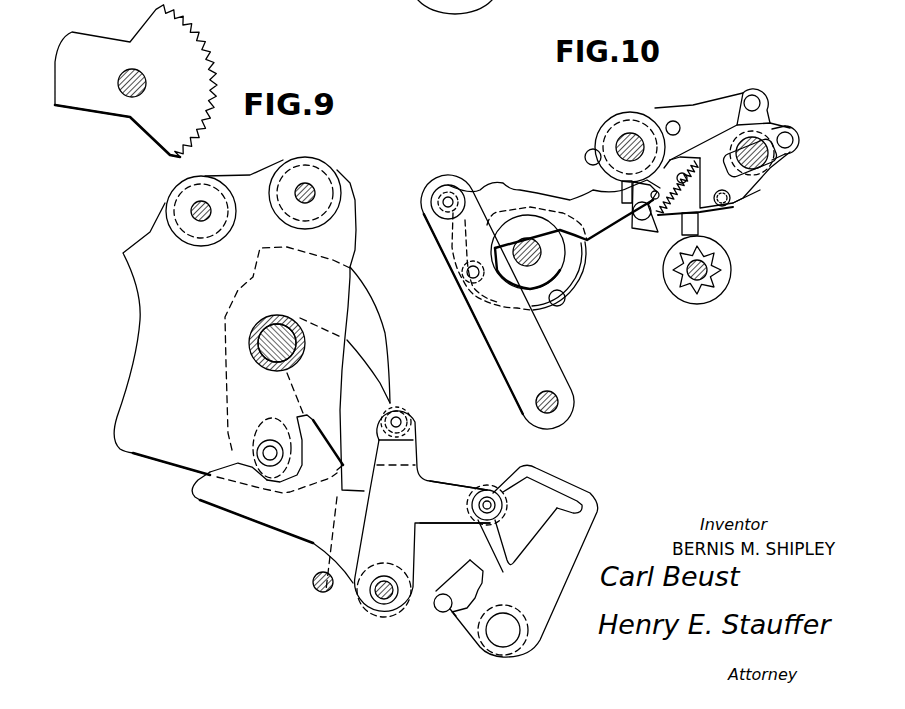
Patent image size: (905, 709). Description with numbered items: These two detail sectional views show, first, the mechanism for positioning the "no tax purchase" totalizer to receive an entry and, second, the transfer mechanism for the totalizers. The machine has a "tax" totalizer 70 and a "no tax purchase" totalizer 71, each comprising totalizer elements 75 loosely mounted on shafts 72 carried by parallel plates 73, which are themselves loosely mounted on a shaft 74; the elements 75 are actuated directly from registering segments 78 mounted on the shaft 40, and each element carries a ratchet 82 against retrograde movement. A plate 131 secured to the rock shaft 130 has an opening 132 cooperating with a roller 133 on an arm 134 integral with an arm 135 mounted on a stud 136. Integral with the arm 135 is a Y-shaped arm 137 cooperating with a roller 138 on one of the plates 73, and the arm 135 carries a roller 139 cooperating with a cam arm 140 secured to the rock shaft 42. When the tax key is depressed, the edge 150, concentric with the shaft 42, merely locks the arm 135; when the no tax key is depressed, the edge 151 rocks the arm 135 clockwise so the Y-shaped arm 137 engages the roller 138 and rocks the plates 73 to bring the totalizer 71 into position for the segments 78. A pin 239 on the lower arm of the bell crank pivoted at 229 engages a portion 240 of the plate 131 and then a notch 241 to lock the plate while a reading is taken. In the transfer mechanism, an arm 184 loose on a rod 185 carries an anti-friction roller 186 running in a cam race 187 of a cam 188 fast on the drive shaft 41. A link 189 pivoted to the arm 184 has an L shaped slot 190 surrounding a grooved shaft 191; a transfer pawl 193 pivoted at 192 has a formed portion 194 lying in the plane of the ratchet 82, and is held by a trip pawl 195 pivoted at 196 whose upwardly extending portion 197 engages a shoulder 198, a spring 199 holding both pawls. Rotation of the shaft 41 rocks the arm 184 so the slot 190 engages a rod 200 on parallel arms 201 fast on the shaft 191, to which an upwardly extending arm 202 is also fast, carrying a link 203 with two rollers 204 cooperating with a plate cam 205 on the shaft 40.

In FIG. 9, the registering segments 78 is at (170, 32).
In FIG. 9, the shaft 40 is at (135, 97).
In FIG. 9, the tax totalizer 70 is at (207, 193).
In FIG. 9, the no tax purchase totalizer 71 is at (310, 176).
In FIG. 9, the shafts 72 is at (297, 196).
In FIG. 9, the parallel plates 73 is at (138, 272).
In FIG. 9, the cam arm 140 is at (253, 277).
In FIG. 10, the cam arm 140 is at (627, 138).
In FIG. 9, the shaft 74 is at (250, 345).
In FIG. 9, the rock shaft 42 is at (265, 428).
In FIG. 9, the roller 138 is at (263, 453).
In FIG. 9, the Y-shaped arm 137 is at (275, 517).
In FIG. 9, the stud 136 is at (375, 598).
In FIG. 9, the arm 135 is at (402, 545).
In FIG. 9, the roller 139 is at (402, 418).
In FIG. 9, the arm 134 is at (433, 487).
In FIG. 9, the roller 133 is at (479, 505).
In FIG. 9, the opening 132 is at (498, 538).
In FIG. 9, the plate 131 is at (540, 610).
In FIG. 9, the pivot 229 is at (565, 482).
In FIG. 9, the rock shaft 130 is at (497, 637).
In FIG. 9, the pin 239 is at (441, 607).
In FIG. 9, the portion 240 is at (445, 614).
In FIG. 9, the notch 241 is at (475, 588).
In FIG. 9, the edge 151 is at (388, 345).
In FIG. 9, the edge 150 is at (366, 374).
In FIG. 10, the link 189 is at (500, 205).
In FIG. 10, the cam 188 is at (585, 273).
In FIG. 10, the cam race 187 is at (566, 300).
In FIG. 10, the drive shaft 41 is at (538, 258).
In FIG. 10, the anti-friction roller 186 is at (469, 278).
In FIG. 10, the arm 184 is at (533, 348).
In FIG. 10, the rod 185 is at (560, 401).
In FIG. 10, the shoulder 198 is at (621, 186).
In FIG. 10, the upwardly extending portion 197 is at (633, 205).
In FIG. 10, the pivot 196 is at (637, 225).
In FIG. 10, the trip pawl 195 is at (647, 216).
In FIG. 10, the formed portion 194 is at (685, 232).
In FIG. 10, the transfer pawl 193 is at (702, 211).
In FIG. 10, the spring 199 is at (693, 187).
In FIG. 10, the pivot 192 is at (737, 206).
In FIG. 10, the grooved shaft 191 is at (772, 160).
In FIG. 10, the L shaped slot 190 is at (763, 140).
In FIG. 10, the rod 200 is at (800, 128).
In FIG. 10, the parallel arms 201 is at (783, 148).
In FIG. 10, the upwardly extending arm 202 is at (765, 113).
In FIG. 10, the link 203 is at (705, 115).
In FIG. 10, the rollers 204 is at (592, 153).
In FIG. 10, the plate cam 205 is at (620, 110).
In FIG. 10, the totalizer elements 75 is at (728, 270).
In FIG. 10, the ratchet 82 is at (713, 260).